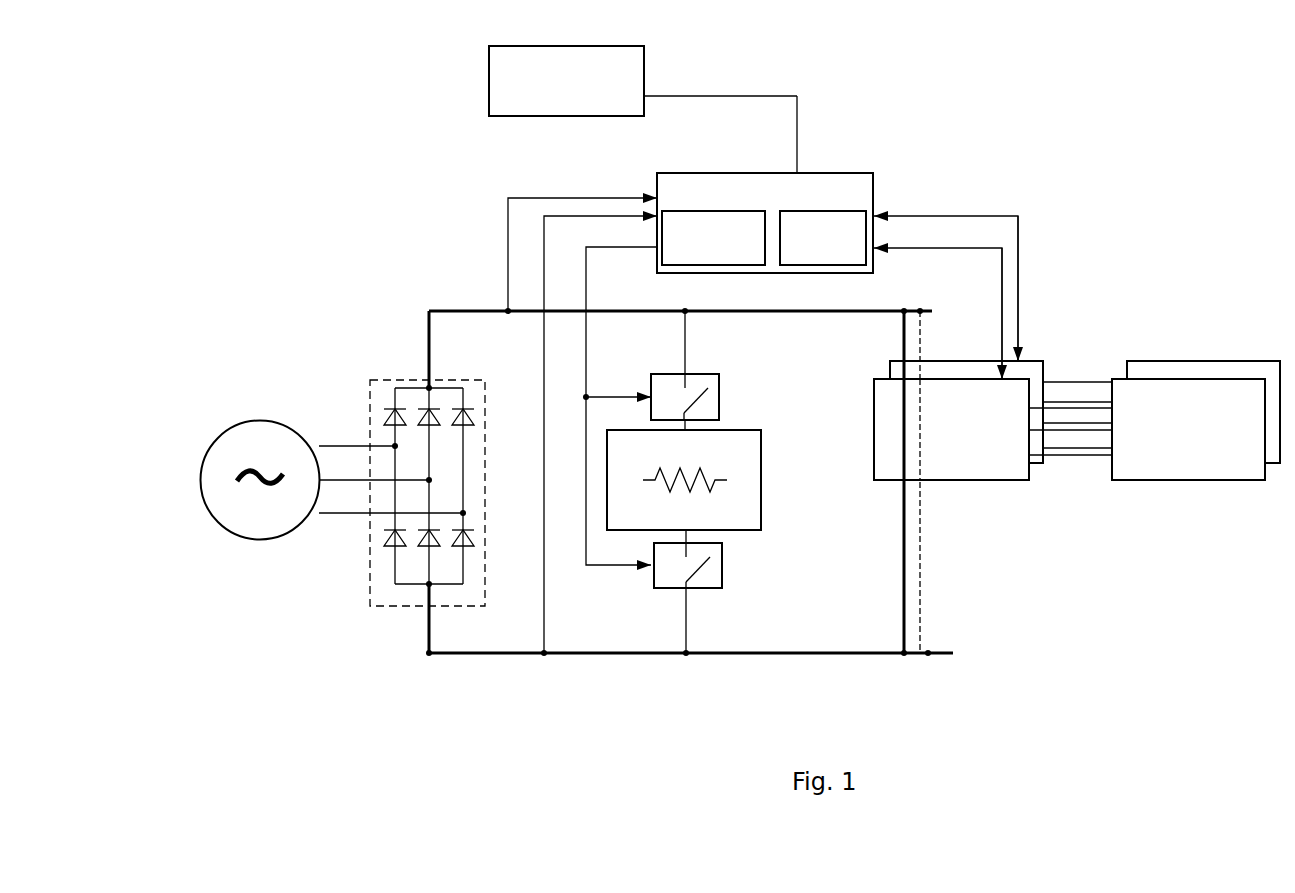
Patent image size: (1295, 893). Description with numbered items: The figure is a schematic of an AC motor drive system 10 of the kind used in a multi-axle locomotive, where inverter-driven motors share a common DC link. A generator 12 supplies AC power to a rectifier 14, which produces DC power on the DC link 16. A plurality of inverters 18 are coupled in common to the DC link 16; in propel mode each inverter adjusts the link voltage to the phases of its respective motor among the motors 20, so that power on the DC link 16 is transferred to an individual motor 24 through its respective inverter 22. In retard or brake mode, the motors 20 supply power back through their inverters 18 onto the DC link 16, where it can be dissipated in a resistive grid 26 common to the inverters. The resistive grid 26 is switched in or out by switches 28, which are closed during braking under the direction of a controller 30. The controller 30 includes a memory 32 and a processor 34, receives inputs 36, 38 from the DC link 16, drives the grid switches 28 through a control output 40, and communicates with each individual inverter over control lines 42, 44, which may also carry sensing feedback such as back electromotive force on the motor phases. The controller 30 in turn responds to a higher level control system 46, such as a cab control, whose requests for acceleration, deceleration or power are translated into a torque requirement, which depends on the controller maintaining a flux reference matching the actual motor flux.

The AC motor drive system 10 is at (779, 21).
The generator 12 is at (238, 422).
The rectifier 14 is at (366, 425).
The DC link 16 is at (483, 307).
The inverters 18 is at (1021, 511).
The motors 20 is at (1197, 521).
The inverter 22 is at (1032, 360).
The motor 24 is at (1163, 361).
The resistive grid 26 is at (761, 498).
The switches 28 is at (722, 410).
The controller 30 is at (794, 227).
The memory 32 is at (840, 268).
The processor 34 is at (752, 266).
The input 36 is at (544, 630).
The input 38 is at (508, 236).
The control output 40 is at (606, 249).
The control line 42 is at (948, 250).
The control line 44 is at (945, 212).
The higher level control system 46 is at (489, 88).